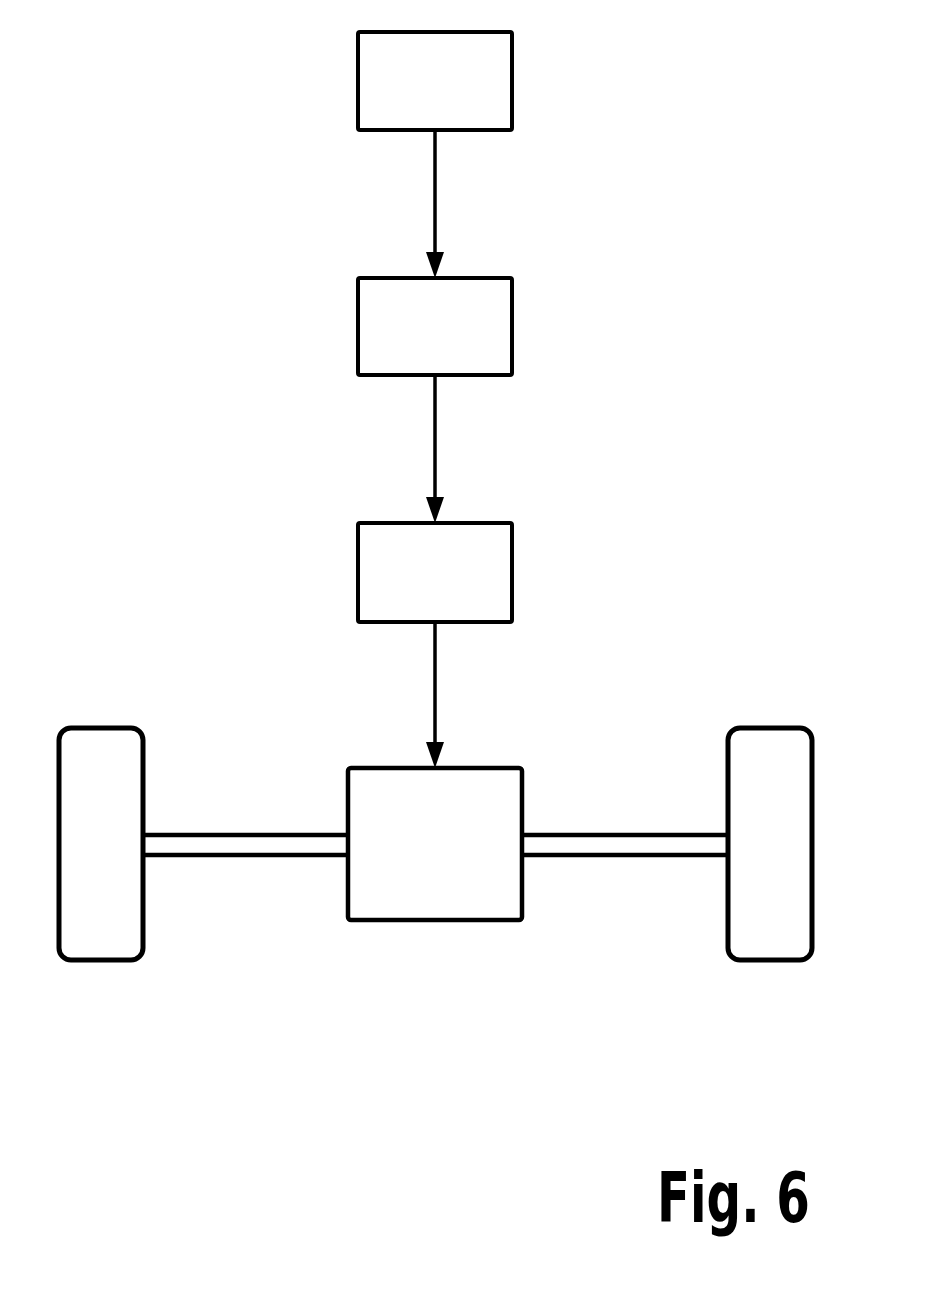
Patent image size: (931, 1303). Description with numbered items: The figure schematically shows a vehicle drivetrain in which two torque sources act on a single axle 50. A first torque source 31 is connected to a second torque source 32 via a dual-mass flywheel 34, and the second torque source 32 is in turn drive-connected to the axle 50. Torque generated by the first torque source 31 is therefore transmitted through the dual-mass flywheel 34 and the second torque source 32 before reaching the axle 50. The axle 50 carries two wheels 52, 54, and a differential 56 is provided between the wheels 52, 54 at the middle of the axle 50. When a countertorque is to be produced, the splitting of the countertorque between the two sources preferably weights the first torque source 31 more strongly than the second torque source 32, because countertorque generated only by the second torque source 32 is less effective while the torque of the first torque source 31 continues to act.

The first torque source 31 is at (512, 80).
The dual-mass flywheel 34 is at (512, 322).
The second torque source 32 is at (512, 568).
The differential 56 is at (433, 920).
The axle 50 is at (252, 878).
The wheel 52 is at (100, 960).
The wheel 54 is at (765, 960).